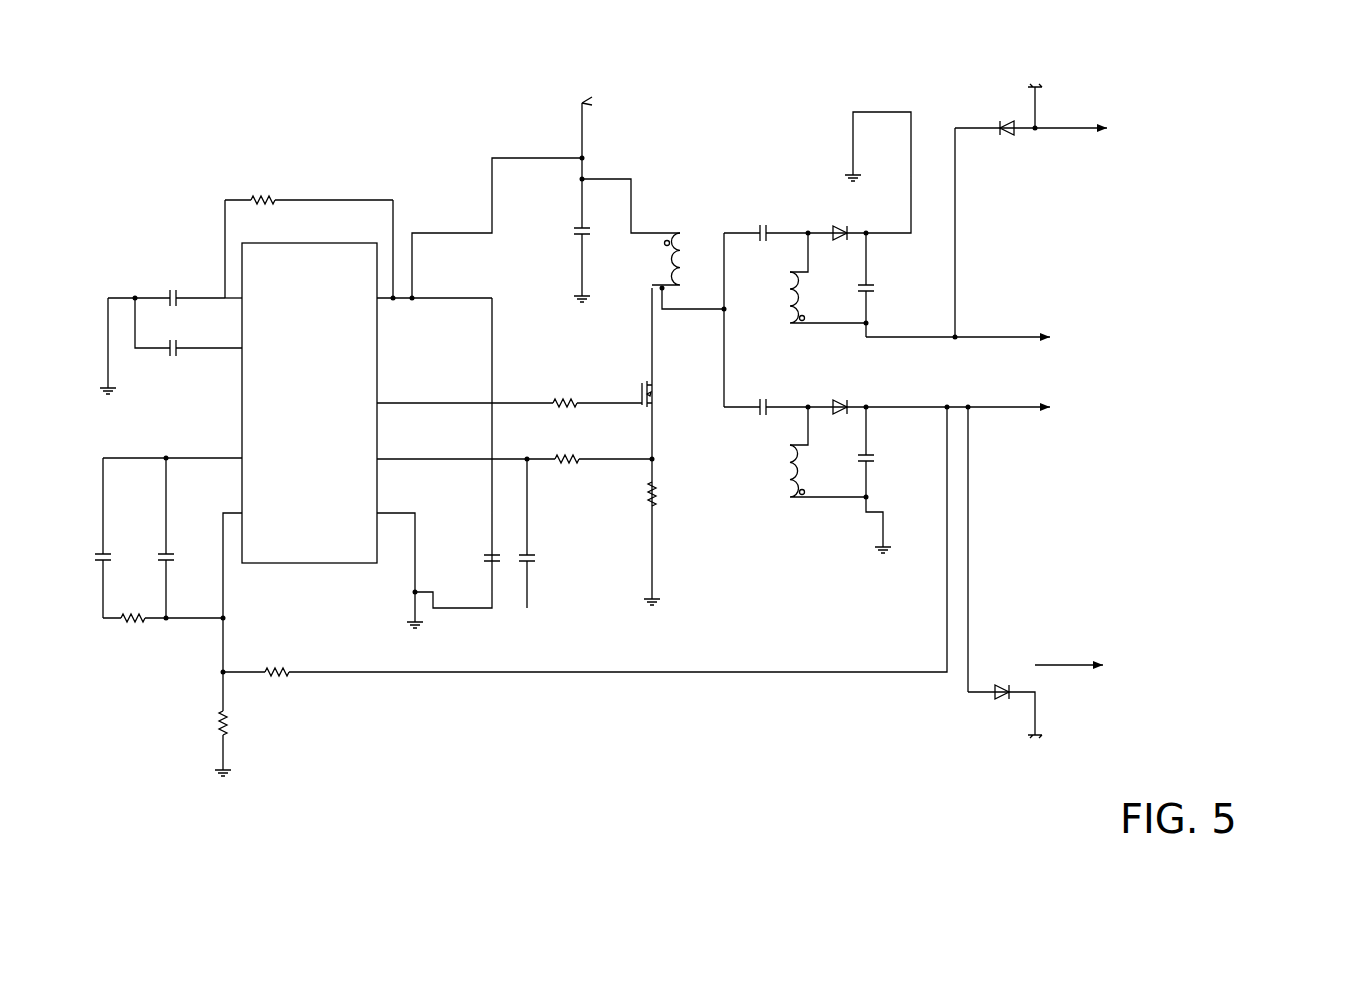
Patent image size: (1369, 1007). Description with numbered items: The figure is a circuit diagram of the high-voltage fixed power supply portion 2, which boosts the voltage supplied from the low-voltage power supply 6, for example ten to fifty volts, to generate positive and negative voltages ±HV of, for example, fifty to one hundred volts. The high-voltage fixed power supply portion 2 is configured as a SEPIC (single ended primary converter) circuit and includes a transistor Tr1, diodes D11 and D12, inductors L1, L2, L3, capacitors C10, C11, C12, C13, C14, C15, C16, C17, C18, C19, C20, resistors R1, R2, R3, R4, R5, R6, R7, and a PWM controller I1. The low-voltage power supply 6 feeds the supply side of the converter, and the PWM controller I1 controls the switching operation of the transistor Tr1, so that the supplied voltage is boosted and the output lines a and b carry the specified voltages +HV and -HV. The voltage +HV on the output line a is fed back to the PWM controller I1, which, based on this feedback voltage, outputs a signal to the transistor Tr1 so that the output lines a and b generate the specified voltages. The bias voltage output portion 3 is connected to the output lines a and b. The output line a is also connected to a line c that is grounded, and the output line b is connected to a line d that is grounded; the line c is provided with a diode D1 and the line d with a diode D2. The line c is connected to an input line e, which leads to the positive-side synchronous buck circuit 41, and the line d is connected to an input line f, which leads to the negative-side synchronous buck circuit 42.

The high-voltage fixed power supply portion 2 is at (753, 83).
The low-voltage power supply 6 is at (666, 122).
The bias voltage output portion 3 is at (1112, 359).
The positive-side synchronous buck circuit 41 is at (1239, 656).
The negative-side synchronous buck circuit 42 is at (1233, 124).
The PWM controller I1 is at (350, 243).
The resistor R1 is at (264, 196).
The resistor R2 is at (563, 394).
The resistor R3 is at (573, 451).
The resistor R4 is at (656, 516).
The resistor R5 is at (280, 679).
The resistor R6 is at (217, 729).
The resistor R7 is at (137, 624).
The capacitor C10 is at (575, 240).
The capacitor C11 is at (768, 400).
The capacitor C12 is at (755, 228).
The capacitor C13 is at (872, 455).
The capacitor C14 is at (870, 285).
The capacitor C15 is at (177, 290).
The capacitor C16 is at (176, 356).
The capacitor C17 is at (108, 552).
The capacitor C18 is at (171, 554).
The capacitor C19 is at (486, 552).
The capacitor C20 is at (532, 552).
The inductor L1 is at (678, 228).
The inductor L2 is at (787, 469).
The inductor L3 is at (787, 299).
The transistor Tr1 is at (641, 385).
The diode D1 is at (1003, 685).
The diode D2 is at (1007, 140).
The diode D11 is at (838, 225).
The diode D12 is at (840, 400).
The output line a is at (920, 402).
The output line b is at (918, 333).
The line c is at (970, 468).
The line d is at (965, 125).
The input line e is at (1058, 665).
The input line f is at (1060, 130).